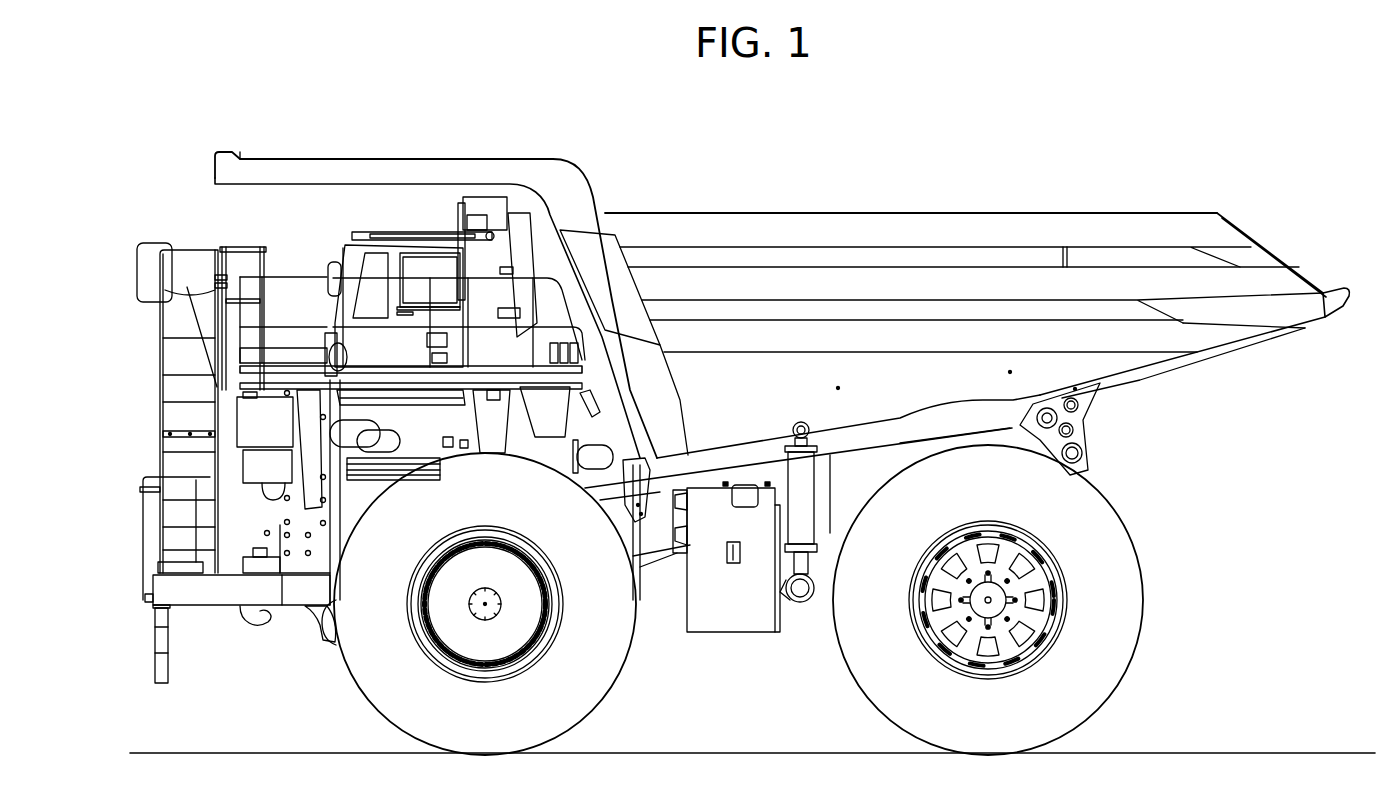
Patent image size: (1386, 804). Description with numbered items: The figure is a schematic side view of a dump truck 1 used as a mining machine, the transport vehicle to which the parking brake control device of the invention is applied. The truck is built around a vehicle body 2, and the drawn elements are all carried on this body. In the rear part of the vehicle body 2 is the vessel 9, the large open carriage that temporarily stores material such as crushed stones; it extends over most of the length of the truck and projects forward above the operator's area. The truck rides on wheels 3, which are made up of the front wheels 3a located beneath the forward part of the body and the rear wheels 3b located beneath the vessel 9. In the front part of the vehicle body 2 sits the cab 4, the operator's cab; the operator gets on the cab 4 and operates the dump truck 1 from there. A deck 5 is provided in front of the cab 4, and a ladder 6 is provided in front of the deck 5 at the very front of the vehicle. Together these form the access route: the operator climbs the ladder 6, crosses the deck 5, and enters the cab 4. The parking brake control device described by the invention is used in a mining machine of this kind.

The dump truck 1 is at (1193, 184).
The vehicle body 2 is at (660, 537).
The wheels 3 is at (630, 703).
The front wheels 3a is at (630, 671).
The rear wheels 3b is at (1142, 612).
The cab 4 is at (360, 233).
The deck 5 is at (275, 350).
The ladder 6 is at (162, 393).
The vessel 9 is at (892, 213).